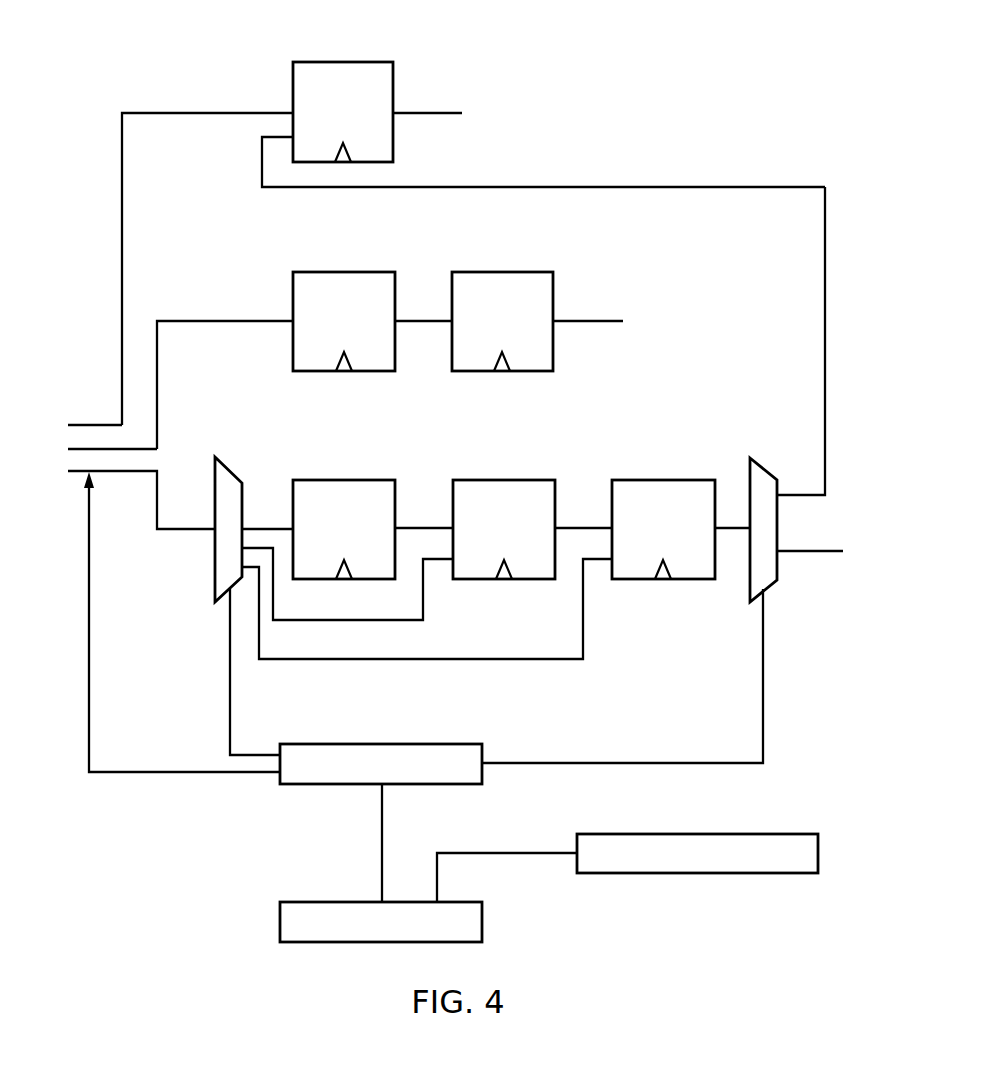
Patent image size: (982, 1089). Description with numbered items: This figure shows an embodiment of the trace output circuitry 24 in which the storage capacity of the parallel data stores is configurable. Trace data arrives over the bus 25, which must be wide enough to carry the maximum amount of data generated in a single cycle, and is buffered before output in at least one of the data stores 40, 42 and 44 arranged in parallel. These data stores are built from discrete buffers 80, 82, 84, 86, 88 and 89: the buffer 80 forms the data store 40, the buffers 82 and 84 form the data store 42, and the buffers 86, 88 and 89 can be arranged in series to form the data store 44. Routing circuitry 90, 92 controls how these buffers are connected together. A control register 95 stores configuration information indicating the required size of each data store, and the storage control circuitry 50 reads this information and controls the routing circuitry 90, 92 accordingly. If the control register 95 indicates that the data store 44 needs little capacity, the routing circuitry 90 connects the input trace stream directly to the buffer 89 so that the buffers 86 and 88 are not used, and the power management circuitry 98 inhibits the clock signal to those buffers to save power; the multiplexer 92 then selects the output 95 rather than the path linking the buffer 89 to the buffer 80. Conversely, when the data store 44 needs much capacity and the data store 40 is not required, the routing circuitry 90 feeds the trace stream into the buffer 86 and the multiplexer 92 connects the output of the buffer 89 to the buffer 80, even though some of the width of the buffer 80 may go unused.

The trace output circuitry 24 is at (768, 118).
The bus 25 is at (92, 425).
The data store 40 is at (473, 221).
The data store 42 is at (437, 337).
The data store 44 is at (444, 598).
The storage control circuitry 50 is at (383, 744).
The buffer 80 is at (343, 62).
The buffer 82 is at (343, 272).
The buffer 84 is at (503, 272).
The buffer 86 is at (343, 480).
The buffer 88 is at (503, 480).
The buffer 89 is at (663, 480).
The routing circuitry 90 is at (232, 470).
The multiplexer 92 is at (765, 470).
The control register 95 is at (428, 113).
The power management circuitry 98 is at (700, 834).